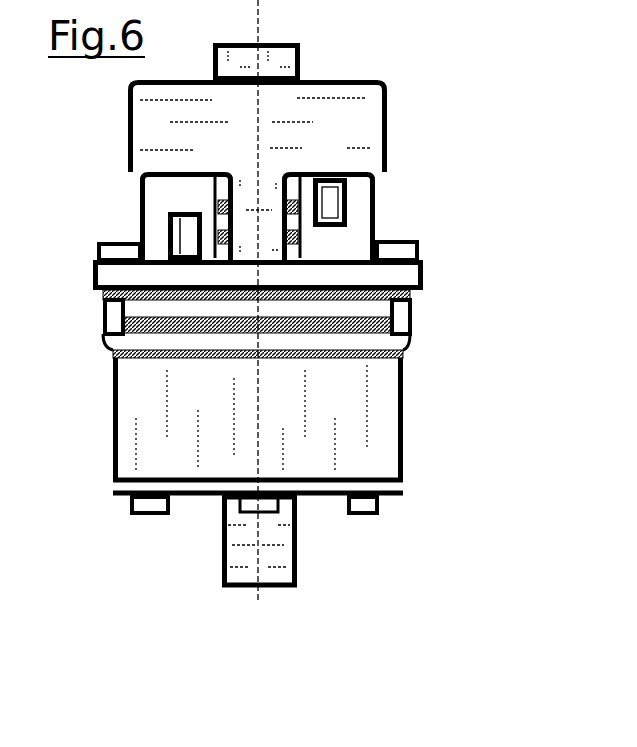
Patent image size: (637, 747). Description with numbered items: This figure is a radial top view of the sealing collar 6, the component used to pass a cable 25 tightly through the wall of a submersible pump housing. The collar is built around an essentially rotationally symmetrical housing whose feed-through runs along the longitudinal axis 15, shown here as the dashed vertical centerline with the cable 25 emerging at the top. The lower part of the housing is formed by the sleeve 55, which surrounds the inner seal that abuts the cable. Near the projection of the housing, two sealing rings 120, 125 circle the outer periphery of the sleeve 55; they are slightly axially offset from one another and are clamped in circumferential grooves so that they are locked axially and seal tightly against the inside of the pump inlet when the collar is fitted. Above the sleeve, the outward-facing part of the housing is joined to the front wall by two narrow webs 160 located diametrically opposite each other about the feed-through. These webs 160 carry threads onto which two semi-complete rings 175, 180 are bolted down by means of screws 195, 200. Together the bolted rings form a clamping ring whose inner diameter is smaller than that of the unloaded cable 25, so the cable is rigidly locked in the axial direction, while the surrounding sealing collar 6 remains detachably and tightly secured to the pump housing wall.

The sealing collar 6 is at (452, 99).
The longitudinal axis 15 is at (258, 32).
The cable 25 is at (300, 66).
The sleeve 55 is at (382, 463).
The sealing ring 120 is at (372, 305).
The sealing ring 125 is at (393, 343).
The webs 160 is at (277, 180).
The semi-complete ring 175 is at (150, 196).
The semi-complete ring 180 is at (360, 218).
The screw 195 is at (190, 236).
The screw 200 is at (327, 197).